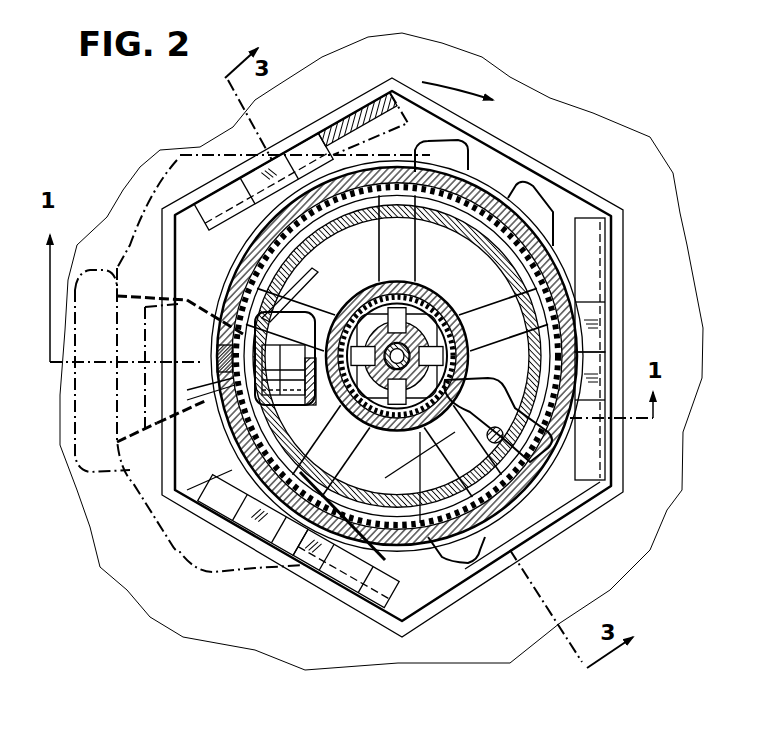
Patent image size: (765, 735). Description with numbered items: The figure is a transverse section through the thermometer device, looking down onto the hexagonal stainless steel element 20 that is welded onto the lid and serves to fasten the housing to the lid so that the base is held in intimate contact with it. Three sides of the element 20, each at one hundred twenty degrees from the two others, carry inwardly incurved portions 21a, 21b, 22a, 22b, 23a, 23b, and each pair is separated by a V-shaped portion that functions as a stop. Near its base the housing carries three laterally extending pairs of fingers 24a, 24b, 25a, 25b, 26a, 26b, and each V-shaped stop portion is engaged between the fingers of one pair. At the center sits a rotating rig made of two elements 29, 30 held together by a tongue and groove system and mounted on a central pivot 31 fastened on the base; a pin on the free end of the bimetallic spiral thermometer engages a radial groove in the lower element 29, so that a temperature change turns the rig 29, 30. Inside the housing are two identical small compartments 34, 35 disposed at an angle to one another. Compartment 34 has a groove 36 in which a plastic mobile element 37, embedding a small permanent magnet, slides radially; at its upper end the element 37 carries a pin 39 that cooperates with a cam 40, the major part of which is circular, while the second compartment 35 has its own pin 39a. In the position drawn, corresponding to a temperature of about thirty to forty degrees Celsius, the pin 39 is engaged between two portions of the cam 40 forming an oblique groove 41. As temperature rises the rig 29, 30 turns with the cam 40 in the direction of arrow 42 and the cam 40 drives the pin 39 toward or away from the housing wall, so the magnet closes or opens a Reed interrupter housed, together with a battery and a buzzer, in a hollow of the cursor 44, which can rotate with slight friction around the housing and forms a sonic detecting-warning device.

The stainless steel element 20 is at (478, 132).
The inwardly incurved portion 21a is at (582, 228).
The inwardly incurved portion 21b is at (598, 457).
The inwardly incurved portion 22a is at (378, 598).
The inwardly incurved portion 22b is at (182, 508).
The inwardly incurved portion 23a is at (217, 215).
The inwardly incurved portion 23b is at (382, 127).
The finger 24a is at (488, 152).
The finger 24b is at (543, 200).
The finger 25a is at (543, 502).
The finger 25b is at (462, 565).
The finger 26a is at (215, 388).
The finger 26b is at (205, 300).
The lower element of the rotating rig 29 is at (402, 340).
The upper element of the rotating rig 30 is at (438, 333).
The central pivot 31 is at (432, 342).
The compartment 34 is at (292, 350).
The compartment 35 is at (498, 428).
The groove 36 is at (298, 400).
The mobile element 37 is at (288, 408).
The pin 39 is at (195, 402).
The pin 39a is at (326, 457).
The cam 40 is at (350, 222).
The oblique groove 41 is at (300, 285).
The arrow 42 is at (452, 83).
The cursor 44 is at (76, 482).